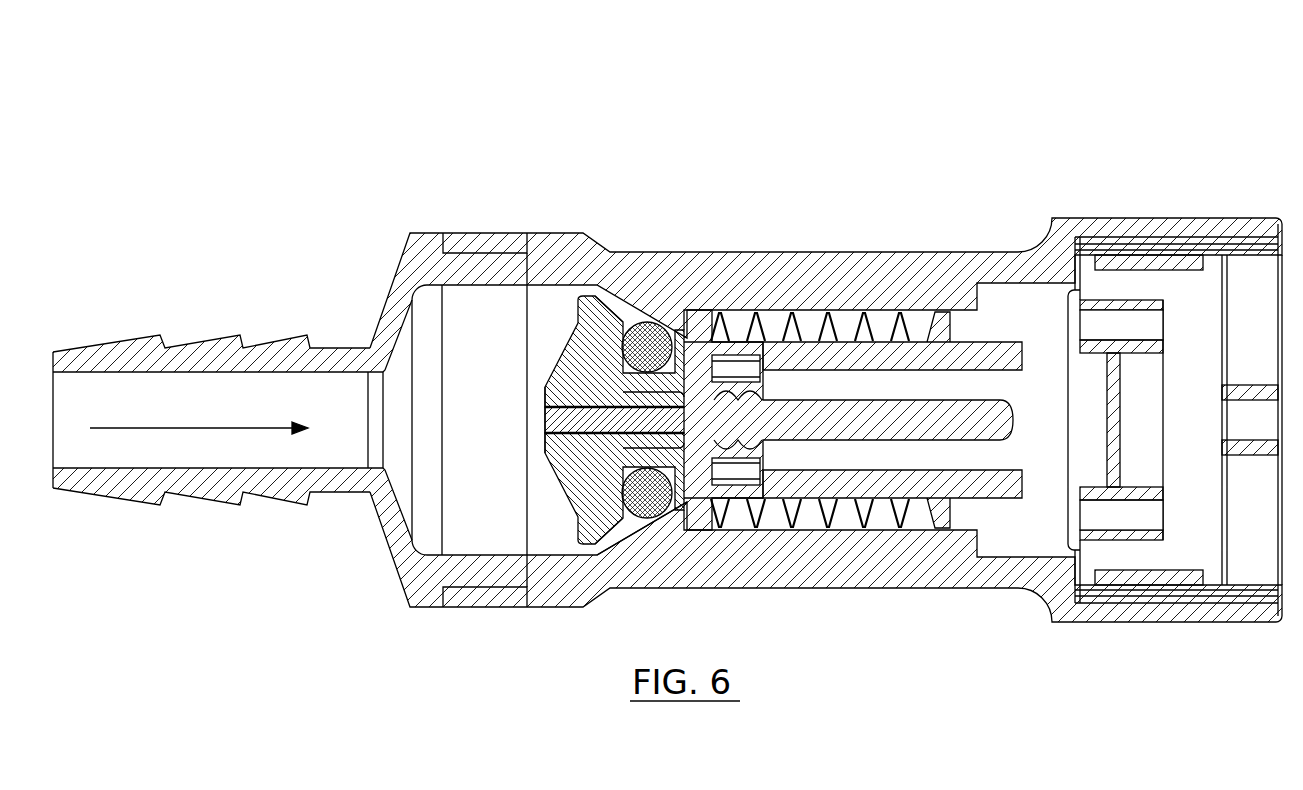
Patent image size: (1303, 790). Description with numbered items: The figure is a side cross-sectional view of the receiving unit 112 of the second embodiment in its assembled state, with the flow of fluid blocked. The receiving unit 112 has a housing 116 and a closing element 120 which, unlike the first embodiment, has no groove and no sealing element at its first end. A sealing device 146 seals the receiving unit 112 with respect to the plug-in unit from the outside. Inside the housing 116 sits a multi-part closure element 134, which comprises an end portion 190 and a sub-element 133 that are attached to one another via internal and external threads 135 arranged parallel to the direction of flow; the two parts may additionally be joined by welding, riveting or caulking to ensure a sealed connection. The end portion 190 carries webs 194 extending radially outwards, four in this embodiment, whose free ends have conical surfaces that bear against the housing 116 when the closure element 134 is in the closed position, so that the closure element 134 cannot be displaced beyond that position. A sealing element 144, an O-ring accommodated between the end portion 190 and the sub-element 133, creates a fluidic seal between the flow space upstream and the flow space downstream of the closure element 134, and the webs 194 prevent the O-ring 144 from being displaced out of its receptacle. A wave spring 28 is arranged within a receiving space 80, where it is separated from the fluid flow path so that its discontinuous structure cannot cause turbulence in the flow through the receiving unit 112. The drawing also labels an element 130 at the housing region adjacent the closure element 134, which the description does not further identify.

The receiving unit 112 is at (425, 130).
The housing 116 is at (390, 232).
The closing element 120 is at (212, 353).
The closure element 134 is at (560, 507).
The end portion 190 is at (570, 350).
The webs 194 is at (607, 320).
The internal and external threads 135 is at (543, 383).
The sealing element 144 is at (658, 330).
The valve seat 130 is at (683, 503).
The sub-element 133 is at (698, 348).
The wave spring 28 is at (830, 318).
The receiving space 80 is at (842, 517).
The sealing device 146 is at (1013, 303).